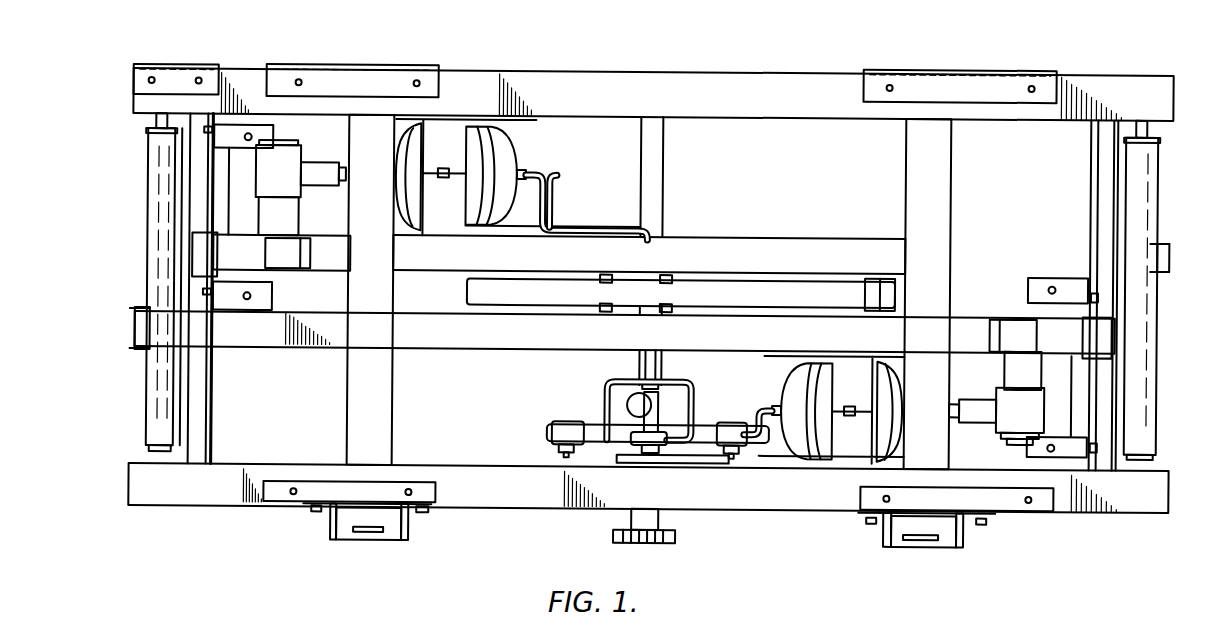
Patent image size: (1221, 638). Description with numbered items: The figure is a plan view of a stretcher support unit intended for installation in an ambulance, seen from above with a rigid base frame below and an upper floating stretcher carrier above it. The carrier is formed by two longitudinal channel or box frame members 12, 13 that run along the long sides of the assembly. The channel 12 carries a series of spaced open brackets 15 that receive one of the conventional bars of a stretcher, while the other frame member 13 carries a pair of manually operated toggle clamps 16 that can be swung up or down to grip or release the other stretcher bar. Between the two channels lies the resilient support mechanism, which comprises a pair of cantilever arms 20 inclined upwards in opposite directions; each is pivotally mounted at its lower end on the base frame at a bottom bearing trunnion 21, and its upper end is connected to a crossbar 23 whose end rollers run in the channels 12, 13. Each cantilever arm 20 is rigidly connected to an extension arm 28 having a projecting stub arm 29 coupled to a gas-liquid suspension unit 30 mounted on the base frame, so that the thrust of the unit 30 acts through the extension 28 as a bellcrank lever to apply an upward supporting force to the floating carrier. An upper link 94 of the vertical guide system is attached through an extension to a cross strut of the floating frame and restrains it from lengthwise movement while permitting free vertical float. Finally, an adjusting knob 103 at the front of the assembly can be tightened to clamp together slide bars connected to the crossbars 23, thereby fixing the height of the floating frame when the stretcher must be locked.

The longitudinal channel frame member 12 is at (672, 88).
The longitudinal channel frame member 13 is at (556, 495).
The open bracket 15 is at (214, 73).
The toggle clamp 16 is at (393, 522).
The cantilever arm 20 is at (465, 262).
The bottom bearing trunnion 21 is at (235, 170).
The crossbar 23 is at (158, 262).
The extension arm 28 is at (290, 268).
The stub arm 29 is at (284, 170).
The gas-liquid suspension unit 30 is at (500, 130).
The upper link 94 is at (757, 290).
The adjusting knob 103 is at (680, 538).